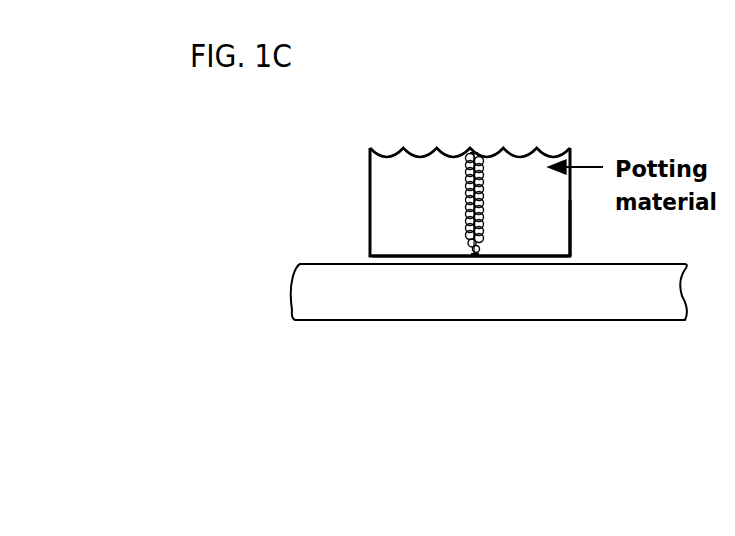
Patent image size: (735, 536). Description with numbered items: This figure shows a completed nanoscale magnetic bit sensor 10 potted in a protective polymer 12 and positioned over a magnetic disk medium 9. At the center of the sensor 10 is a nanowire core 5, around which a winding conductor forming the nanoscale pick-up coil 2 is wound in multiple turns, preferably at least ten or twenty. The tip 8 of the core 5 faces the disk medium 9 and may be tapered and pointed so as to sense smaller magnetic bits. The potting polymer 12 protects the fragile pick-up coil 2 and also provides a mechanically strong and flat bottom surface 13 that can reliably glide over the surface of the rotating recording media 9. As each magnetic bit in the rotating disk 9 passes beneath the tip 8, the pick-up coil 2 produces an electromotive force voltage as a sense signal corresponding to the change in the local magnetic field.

The nanoscale pick-up coil 2 is at (483, 198).
The core 5 is at (473, 152).
The tip 8 is at (477, 253).
The magnetic disk medium 9 is at (282, 280).
The magnetic bit sensor 10 is at (422, 211).
The polymer 12 is at (605, 228).
The bottom surface 13 is at (371, 256).